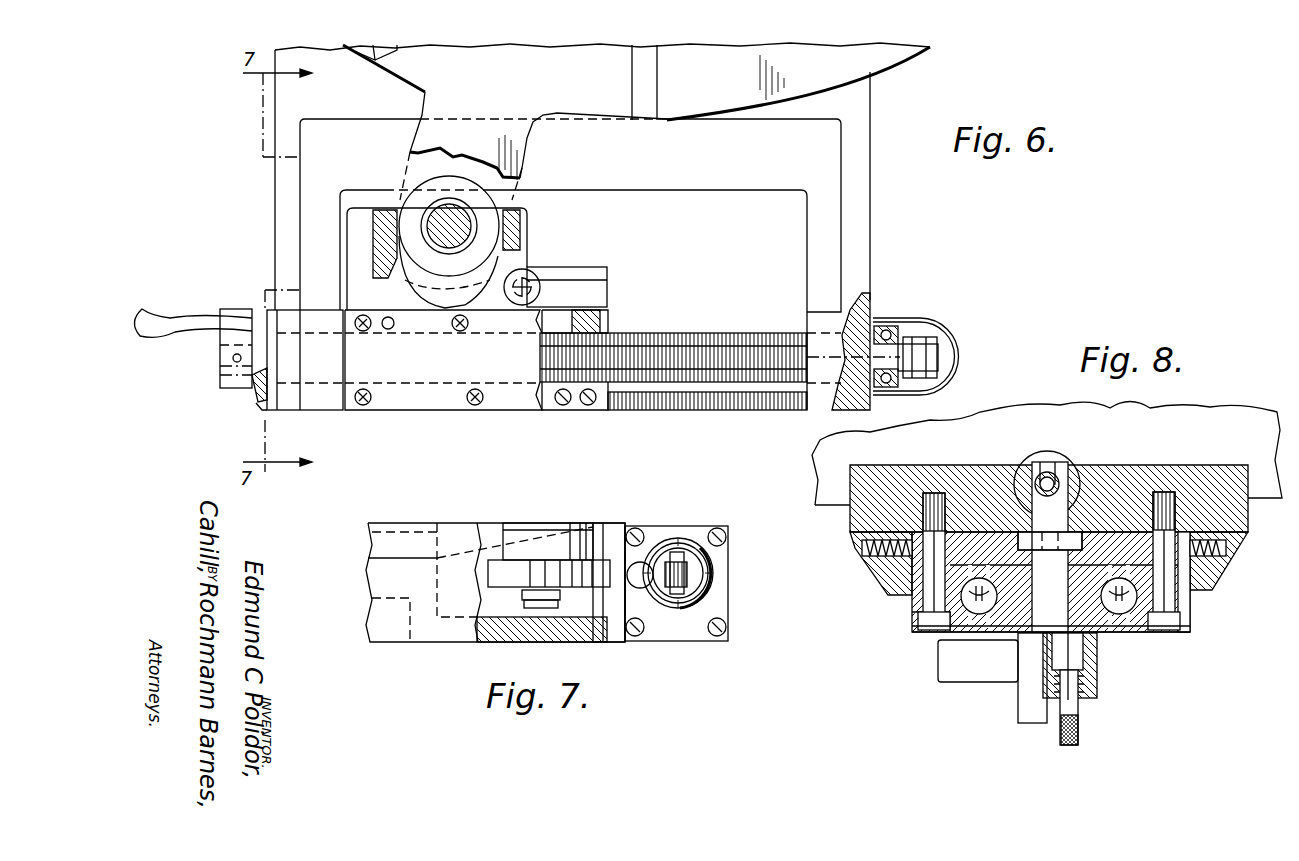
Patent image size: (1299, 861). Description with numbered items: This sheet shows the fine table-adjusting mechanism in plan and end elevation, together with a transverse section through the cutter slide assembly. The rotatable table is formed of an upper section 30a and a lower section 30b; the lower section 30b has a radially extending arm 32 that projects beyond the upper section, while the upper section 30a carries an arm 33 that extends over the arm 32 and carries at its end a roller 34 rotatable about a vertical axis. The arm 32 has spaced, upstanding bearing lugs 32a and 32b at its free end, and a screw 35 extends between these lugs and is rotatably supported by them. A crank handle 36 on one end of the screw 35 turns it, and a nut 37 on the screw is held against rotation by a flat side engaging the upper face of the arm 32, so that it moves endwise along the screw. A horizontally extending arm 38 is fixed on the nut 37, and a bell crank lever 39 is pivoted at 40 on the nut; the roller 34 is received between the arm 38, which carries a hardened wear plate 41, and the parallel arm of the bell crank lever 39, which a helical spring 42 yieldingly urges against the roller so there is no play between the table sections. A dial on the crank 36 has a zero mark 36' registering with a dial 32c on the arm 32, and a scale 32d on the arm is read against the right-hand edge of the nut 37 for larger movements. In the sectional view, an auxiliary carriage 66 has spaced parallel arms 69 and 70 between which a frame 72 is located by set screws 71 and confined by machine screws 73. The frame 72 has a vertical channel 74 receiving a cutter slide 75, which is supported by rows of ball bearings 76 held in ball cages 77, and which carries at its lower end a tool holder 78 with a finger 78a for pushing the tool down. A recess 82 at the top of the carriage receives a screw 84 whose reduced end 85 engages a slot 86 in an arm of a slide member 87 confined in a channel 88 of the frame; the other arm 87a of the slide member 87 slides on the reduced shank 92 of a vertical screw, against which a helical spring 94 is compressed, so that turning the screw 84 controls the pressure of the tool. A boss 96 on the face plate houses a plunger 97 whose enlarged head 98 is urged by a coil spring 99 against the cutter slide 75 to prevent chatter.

In FIG. 6, the upper table section 30a is at (925, 58).
In FIG. 7, the upper table section 30a is at (383, 542).
In FIG. 7, the lower table section 30b is at (380, 582).
In FIG. 6, the arm 32 is at (287, 178).
In FIG. 7, the arm 32 is at (462, 640).
In FIG. 6, the bearing lug 32a is at (823, 405).
In FIG. 6, the bearing lug 32b is at (311, 411).
In FIG. 7, the bearing lug 32b is at (735, 606).
In FIG. 6, the dial 32c is at (262, 408).
In FIG. 7, the dial 32c is at (692, 640).
In FIG. 6, the scale 32d is at (685, 410).
In FIG. 6, the arm 33 is at (523, 140).
In FIG. 7, the arm 33 is at (492, 536).
In FIG. 6, the roller 34 is at (420, 178).
In FIG. 7, the roller 34 is at (500, 574).
In FIG. 6, the screw 35 is at (768, 333).
In FIG. 7, the screw 35 is at (700, 576).
In FIG. 6, the crank handle 36 is at (193, 326).
In FIG. 7, the crank handle 36 is at (653, 536).
In FIG. 6, the zero mark 36' is at (229, 400).
In FIG. 7, the zero mark 36' is at (704, 538).
In FIG. 6, the nut 37 is at (516, 410).
In FIG. 6, the arm 38 is at (355, 252).
In FIG. 6, the bell crank lever 39 is at (522, 250).
In FIG. 7, the bell crank lever 39 is at (600, 536).
In FIG. 6, the pivot 40 is at (515, 302).
In FIG. 6, the wear plate 41 is at (372, 231).
In FIG. 6, the helical spring 42 is at (602, 318).
In FIG. 8, the auxiliary carriage 66 is at (1150, 425).
In FIG. 8, the arm 69 is at (1215, 575).
In FIG. 8, the arm 70 is at (895, 575).
In FIG. 8, the set screw 71 is at (862, 548).
In FIG. 8, the frame 72 is at (1190, 608).
In FIG. 8, the machine screw 73 is at (932, 492).
In FIG. 8, the vertical channel 74 is at (1105, 530).
In FIG. 8, the cutter slide 75 is at (968, 678).
In FIG. 8, the ball bearings 76 is at (965, 598).
In FIG. 8, the ball cage 77 is at (1018, 640).
In FIG. 8, the tool holder 78 is at (1033, 724).
In FIG. 8, the finger 78a is at (938, 648).
In FIG. 8, the recess 82 is at (1032, 470).
In FIG. 8, the screw 84 is at (1065, 468).
In FIG. 8, the reduced non-threaded end 85 is at (1052, 475).
In FIG. 8, the slot 86 is at (1048, 472).
In FIG. 8, the slide member 87 is at (1030, 478).
In FIG. 8, the arm 87a is at (1045, 640).
In FIG. 8, the channel 88 is at (1015, 535).
In FIG. 8, the reduced shank 92 is at (1025, 650).
In FIG. 8, the helical spring 94 is at (1045, 610).
In FIG. 8, the boss 96 is at (1062, 700).
In FIG. 8, the plunger 97 is at (1080, 720).
In FIG. 8, the enlarged head 98 is at (1095, 655).
In FIG. 8, the coil spring 99 is at (1082, 694).